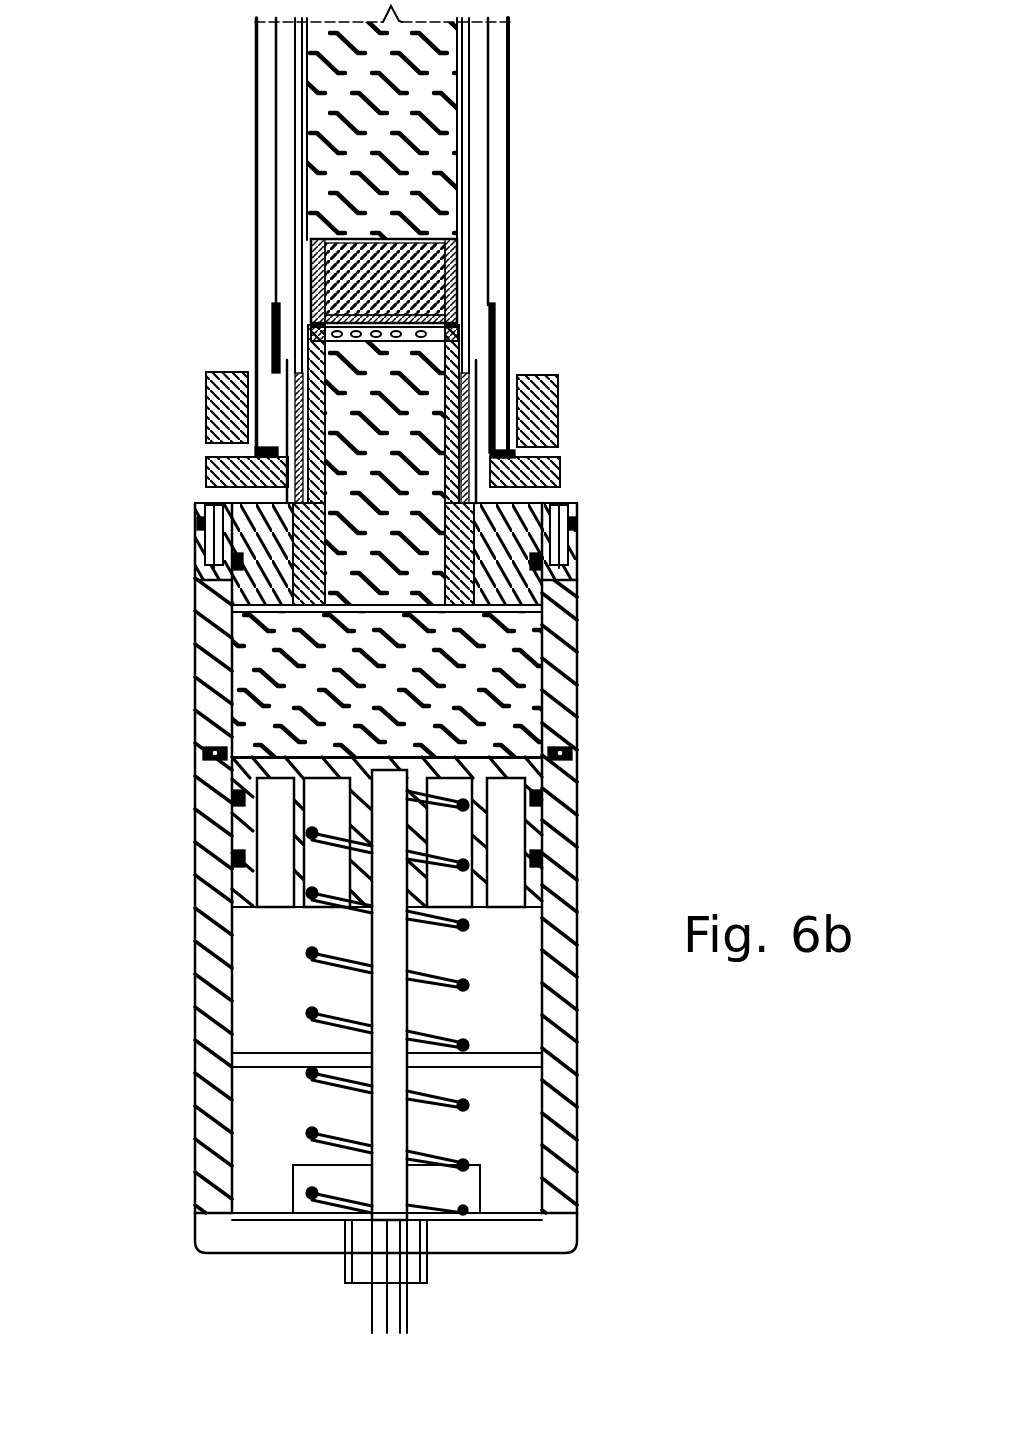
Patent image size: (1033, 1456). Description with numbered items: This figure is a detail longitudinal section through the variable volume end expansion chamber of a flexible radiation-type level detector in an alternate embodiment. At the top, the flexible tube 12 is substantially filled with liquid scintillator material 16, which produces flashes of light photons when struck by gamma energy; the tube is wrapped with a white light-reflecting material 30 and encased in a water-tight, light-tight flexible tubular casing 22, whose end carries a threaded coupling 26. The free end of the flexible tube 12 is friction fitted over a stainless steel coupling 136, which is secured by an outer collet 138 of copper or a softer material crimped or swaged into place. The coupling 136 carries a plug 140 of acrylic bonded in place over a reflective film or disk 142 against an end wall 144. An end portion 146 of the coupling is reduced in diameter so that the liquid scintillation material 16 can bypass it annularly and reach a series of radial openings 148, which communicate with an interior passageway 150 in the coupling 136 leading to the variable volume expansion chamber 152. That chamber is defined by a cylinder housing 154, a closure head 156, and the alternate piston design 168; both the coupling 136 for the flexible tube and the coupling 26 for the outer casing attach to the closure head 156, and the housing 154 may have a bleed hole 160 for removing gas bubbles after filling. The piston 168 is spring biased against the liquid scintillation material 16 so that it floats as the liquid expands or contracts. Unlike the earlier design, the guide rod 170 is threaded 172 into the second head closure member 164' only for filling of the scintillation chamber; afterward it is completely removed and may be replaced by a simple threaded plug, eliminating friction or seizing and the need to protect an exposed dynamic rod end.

The flexible tube 12 is at (503, 55).
The liquid scintillator material 16 is at (315, 65).
The flexible tubular casing 22 is at (518, 135).
The threaded coupling 26 is at (591, 376).
The light-reflecting material 30 is at (296, 150).
The coupling 136 is at (312, 583).
The outer collet 138 is at (473, 387).
The plug 140 is at (420, 245).
The reflective film or disk 142 is at (455, 280).
The end wall 144 is at (458, 300).
The end portion 146 is at (323, 262).
The radial openings 148 is at (315, 342).
The interior passageway 150 is at (358, 402).
The variable volume expansion chamber 152 is at (498, 660).
The cylinder housing 154 is at (568, 700).
The closure head 156 is at (544, 594).
The bleed hole 160 is at (197, 755).
The second head closure member 164' is at (463, 1153).
The alternate piston design 168 is at (535, 785).
The guide rod 170 is at (382, 1003).
The threaded connection 172 is at (412, 1247).